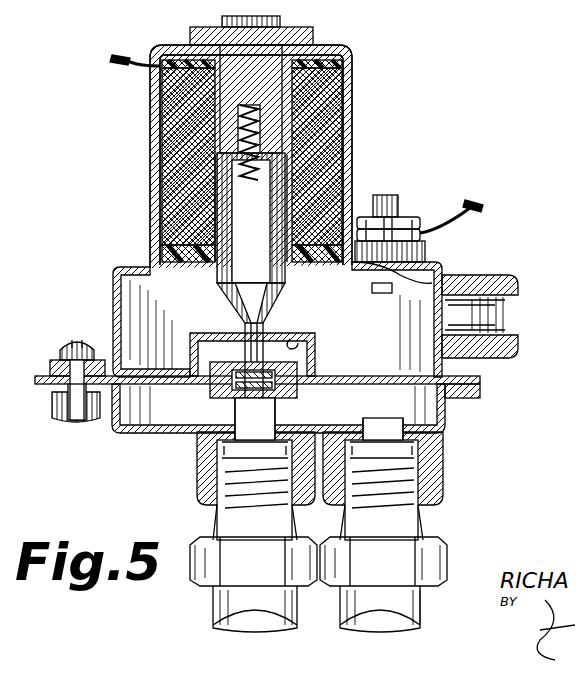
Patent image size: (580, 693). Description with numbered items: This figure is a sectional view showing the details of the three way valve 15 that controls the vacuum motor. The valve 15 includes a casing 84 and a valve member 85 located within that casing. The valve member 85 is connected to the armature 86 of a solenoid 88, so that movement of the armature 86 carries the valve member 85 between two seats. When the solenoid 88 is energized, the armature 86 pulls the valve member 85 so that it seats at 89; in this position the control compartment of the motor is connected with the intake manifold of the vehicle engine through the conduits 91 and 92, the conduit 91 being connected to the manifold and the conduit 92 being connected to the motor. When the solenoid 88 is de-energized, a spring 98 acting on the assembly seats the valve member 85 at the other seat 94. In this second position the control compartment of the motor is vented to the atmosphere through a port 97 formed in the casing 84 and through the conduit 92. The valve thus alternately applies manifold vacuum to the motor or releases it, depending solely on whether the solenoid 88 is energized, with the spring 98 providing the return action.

The solenoid valve assembly 15 is at (127, 262).
The casing 84 is at (112, 286).
The valve member 85 is at (190, 430).
The armature 86 is at (268, 208).
The solenoid 88 is at (330, 97).
The seat 89 is at (292, 344).
The conduit 91 is at (245, 600).
The conduit 92 is at (415, 600).
The seat 94 is at (275, 400).
The port 97 is at (505, 326).
The spring 98 is at (240, 145).